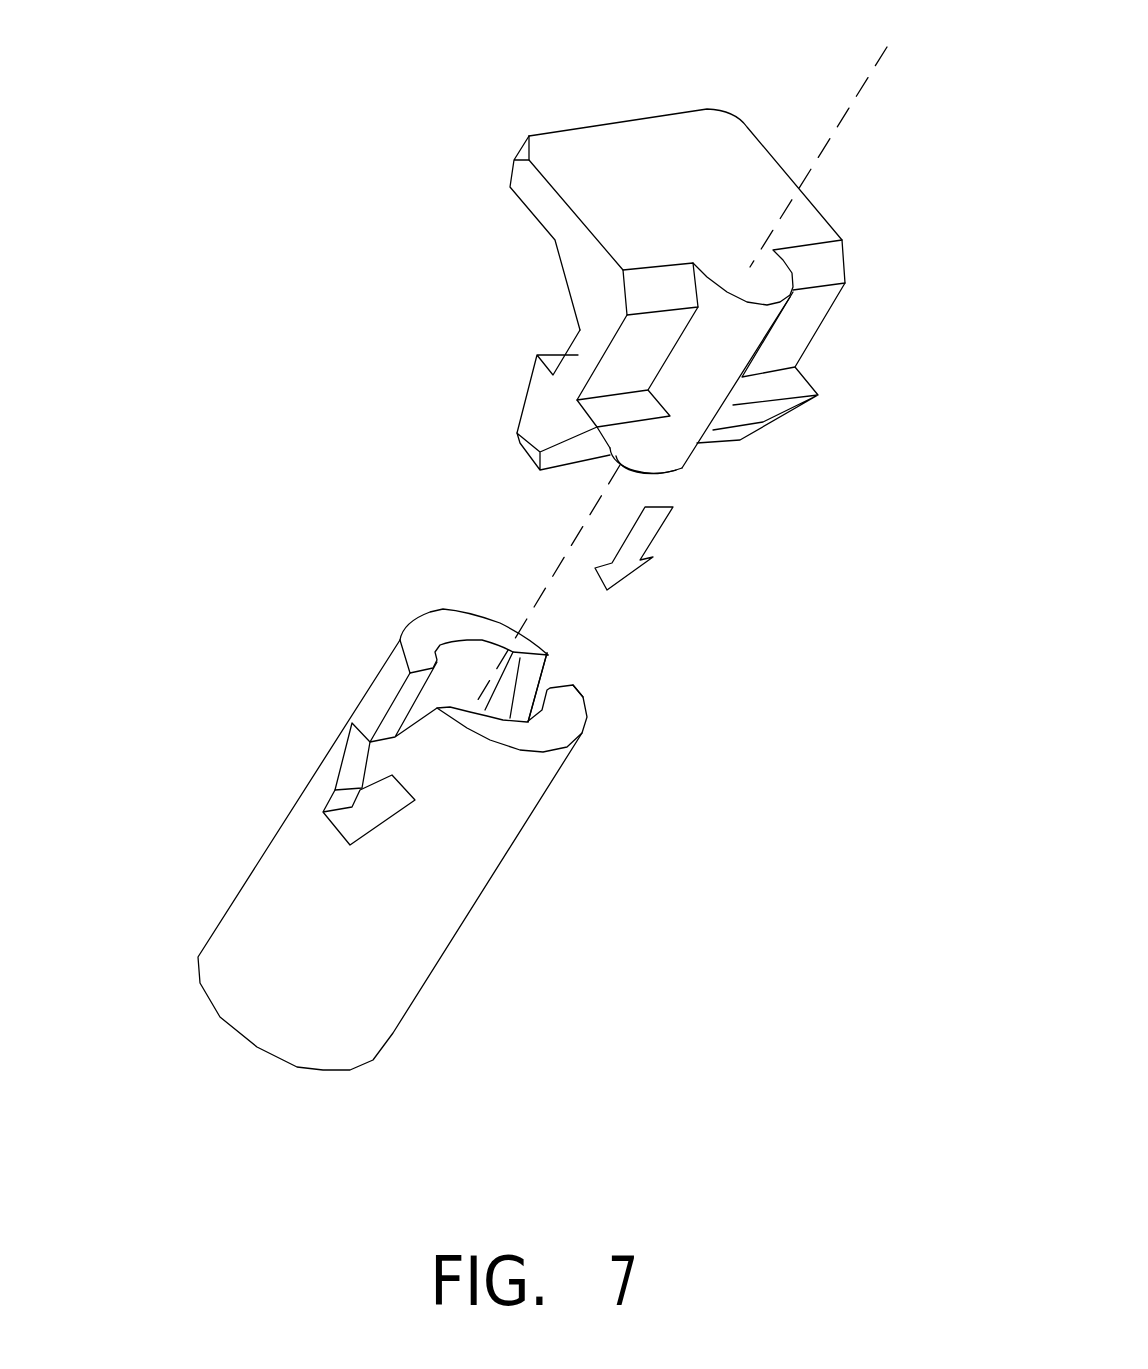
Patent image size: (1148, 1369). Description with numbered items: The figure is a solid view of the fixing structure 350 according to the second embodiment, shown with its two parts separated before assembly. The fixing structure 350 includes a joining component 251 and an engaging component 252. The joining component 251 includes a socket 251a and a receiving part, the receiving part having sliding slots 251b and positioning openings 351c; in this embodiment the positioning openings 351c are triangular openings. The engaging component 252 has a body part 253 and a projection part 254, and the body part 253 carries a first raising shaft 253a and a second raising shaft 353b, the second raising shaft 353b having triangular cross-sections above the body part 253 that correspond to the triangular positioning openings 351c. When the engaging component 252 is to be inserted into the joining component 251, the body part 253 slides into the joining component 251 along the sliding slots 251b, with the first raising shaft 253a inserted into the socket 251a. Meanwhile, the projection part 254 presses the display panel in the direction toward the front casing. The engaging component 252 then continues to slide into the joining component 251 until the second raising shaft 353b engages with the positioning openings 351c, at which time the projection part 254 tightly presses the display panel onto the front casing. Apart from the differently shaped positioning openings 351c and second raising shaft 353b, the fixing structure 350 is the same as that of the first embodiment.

The fixing structure 350 is at (814, 1114).
The projection part 254 is at (622, 142).
The body part 253 is at (546, 355).
The second raising shaft 353b is at (540, 413).
The engaging component 252 is at (830, 343).
The first raising shaft 253a is at (667, 457).
The joining component 251 is at (503, 881).
The socket 251a is at (469, 647).
The sliding slots 251b is at (408, 712).
The positioning openings 351c is at (343, 766).